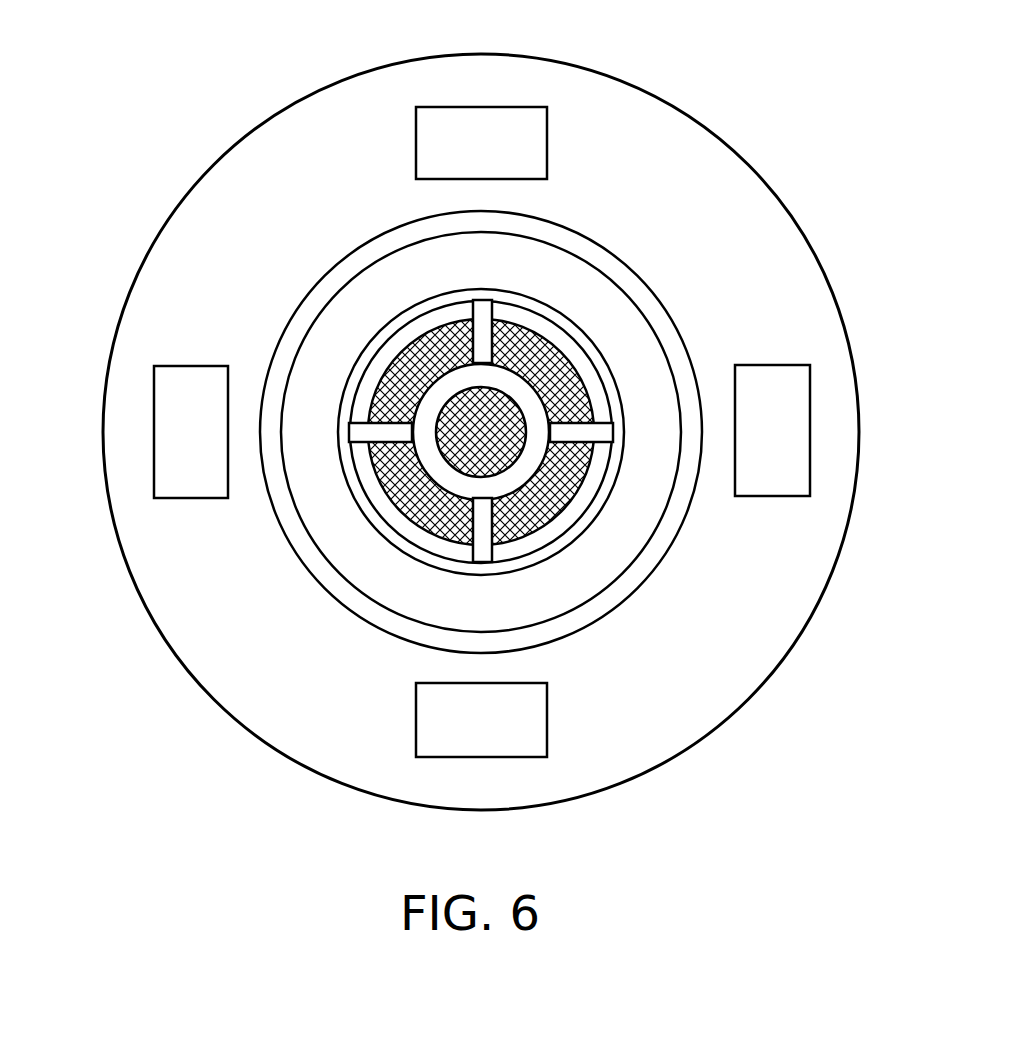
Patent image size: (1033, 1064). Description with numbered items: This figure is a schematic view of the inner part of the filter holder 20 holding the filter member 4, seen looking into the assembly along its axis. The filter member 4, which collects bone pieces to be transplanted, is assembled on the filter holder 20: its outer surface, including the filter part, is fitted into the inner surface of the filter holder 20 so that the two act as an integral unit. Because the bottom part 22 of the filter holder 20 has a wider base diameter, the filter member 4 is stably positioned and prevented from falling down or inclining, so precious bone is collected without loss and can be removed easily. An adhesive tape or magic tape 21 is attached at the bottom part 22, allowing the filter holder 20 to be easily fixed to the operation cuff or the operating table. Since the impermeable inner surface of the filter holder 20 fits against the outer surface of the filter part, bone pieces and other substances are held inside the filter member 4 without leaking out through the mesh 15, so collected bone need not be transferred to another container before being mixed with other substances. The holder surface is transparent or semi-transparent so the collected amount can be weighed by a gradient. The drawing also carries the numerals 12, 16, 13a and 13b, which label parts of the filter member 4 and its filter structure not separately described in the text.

The filter member 4 is at (380, 282).
The filter holder 20 is at (638, 273).
The adhesive tape or magic tape 21 is at (170, 430).
The bottom part 22 is at (830, 429).
The outer sleeve 12 is at (385, 527).
The inner sleeve 16 is at (352, 463).
The mesh 15 is at (555, 503).
The radial ribs 13a is at (485, 547).
The hub ring 13b is at (428, 408).